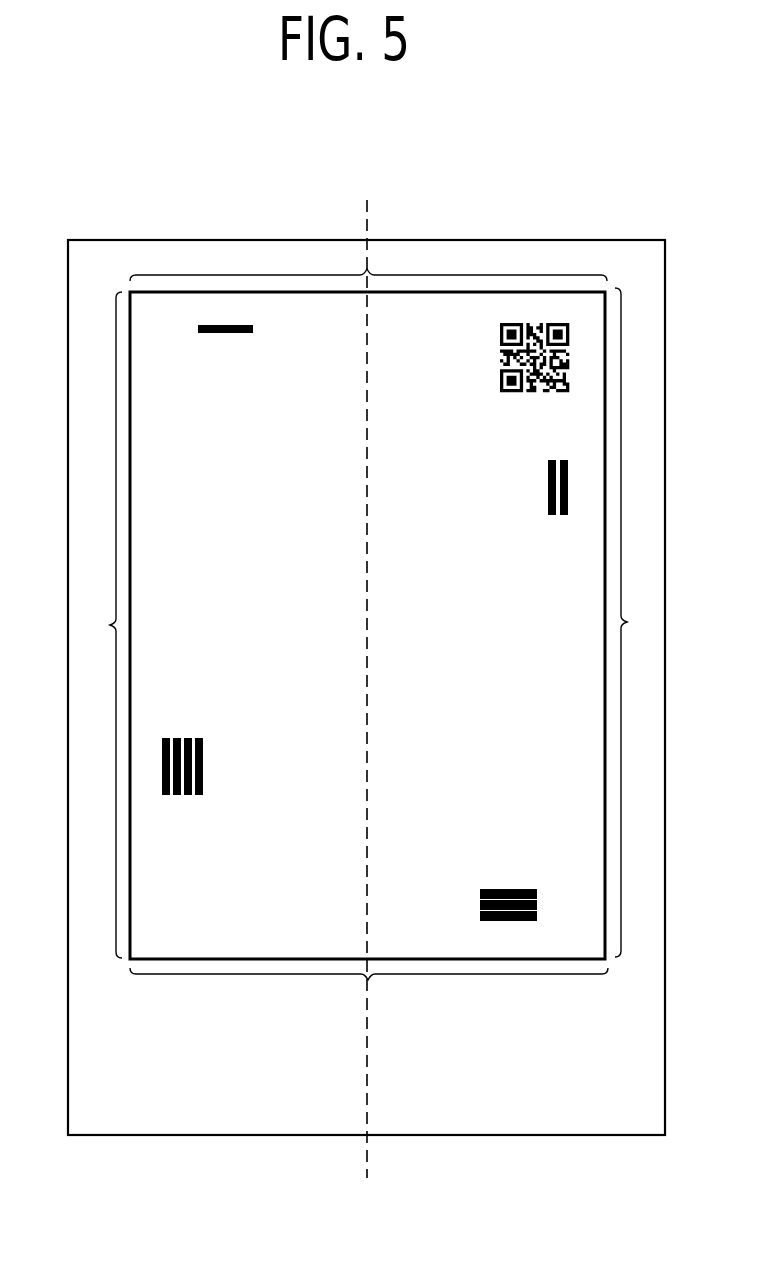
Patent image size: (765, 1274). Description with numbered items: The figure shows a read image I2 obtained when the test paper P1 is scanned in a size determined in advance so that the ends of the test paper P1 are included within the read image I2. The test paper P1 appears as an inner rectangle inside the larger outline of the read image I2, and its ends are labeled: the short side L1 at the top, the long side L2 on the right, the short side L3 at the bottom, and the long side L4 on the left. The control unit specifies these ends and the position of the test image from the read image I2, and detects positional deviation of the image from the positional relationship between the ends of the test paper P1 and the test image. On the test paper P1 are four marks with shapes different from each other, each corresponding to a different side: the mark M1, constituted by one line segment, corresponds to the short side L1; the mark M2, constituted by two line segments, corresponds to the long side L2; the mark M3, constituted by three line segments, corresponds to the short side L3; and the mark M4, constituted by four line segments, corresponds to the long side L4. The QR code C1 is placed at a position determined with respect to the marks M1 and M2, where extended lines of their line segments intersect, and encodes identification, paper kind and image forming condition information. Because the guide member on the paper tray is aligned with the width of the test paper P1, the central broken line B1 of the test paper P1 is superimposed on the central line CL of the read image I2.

The read image I2 is at (268, 240).
The test paper P1 is at (190, 292).
The broken line B1 is at (369, 708).
The short side L1 is at (368, 260).
The long side L2 is at (637, 622).
The short side L3 is at (369, 990).
The long side L4 is at (101, 625).
The mark M1 is at (212, 334).
The mark M2 is at (556, 459).
The mark M3 is at (512, 888).
The mark M4 is at (184, 797).
The QR code C1 is at (498, 358).